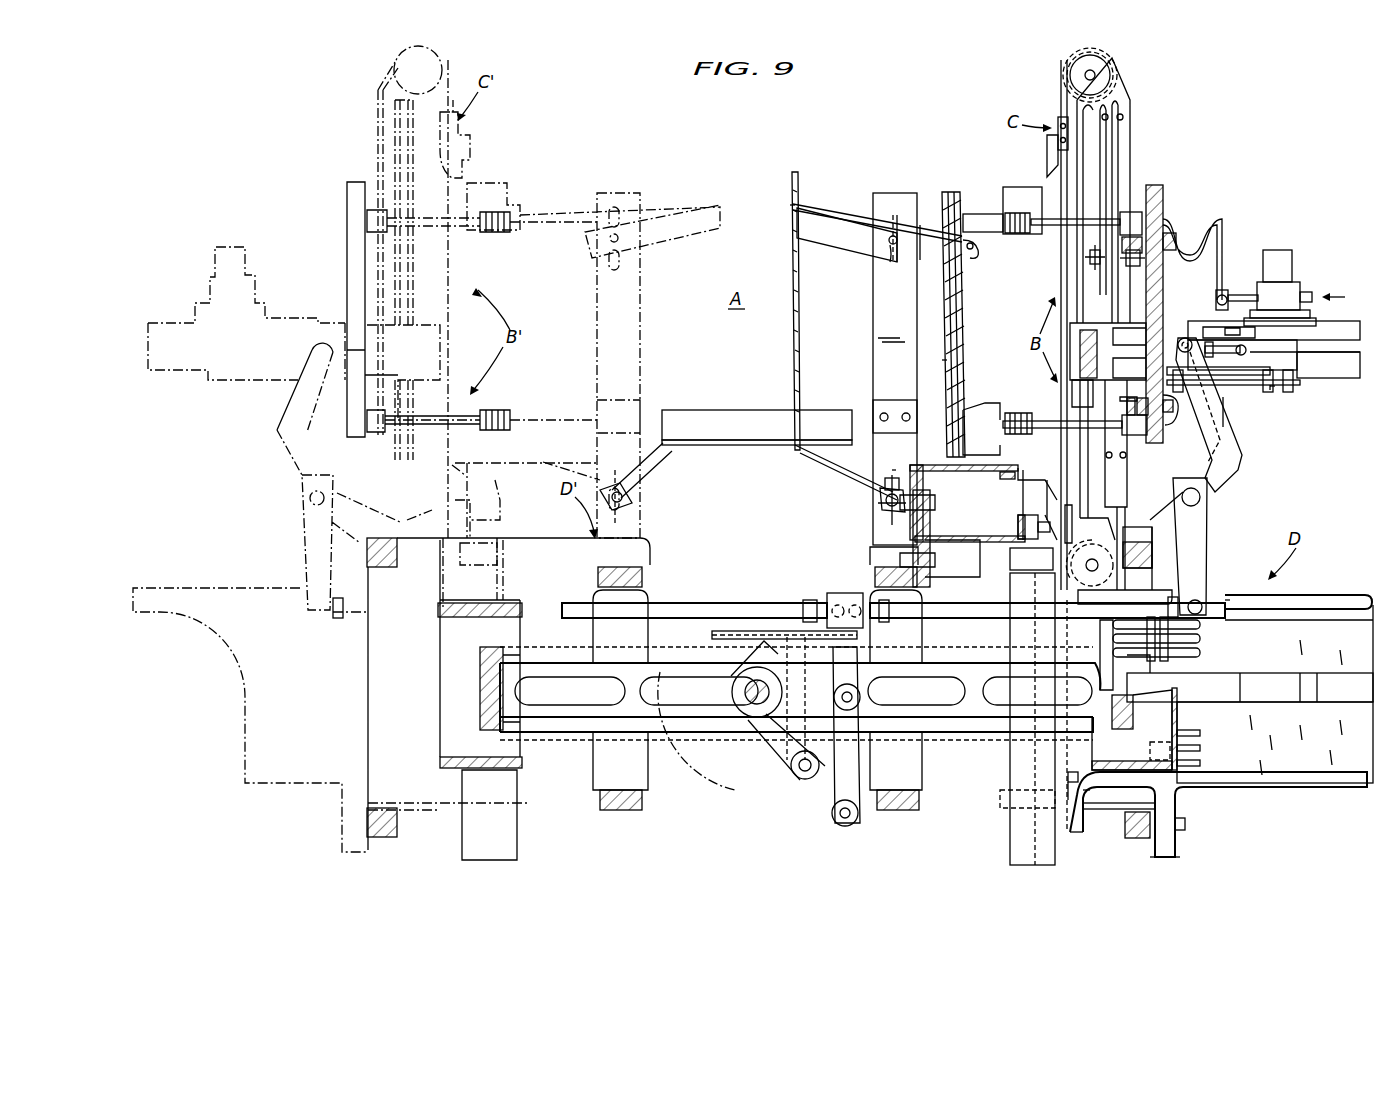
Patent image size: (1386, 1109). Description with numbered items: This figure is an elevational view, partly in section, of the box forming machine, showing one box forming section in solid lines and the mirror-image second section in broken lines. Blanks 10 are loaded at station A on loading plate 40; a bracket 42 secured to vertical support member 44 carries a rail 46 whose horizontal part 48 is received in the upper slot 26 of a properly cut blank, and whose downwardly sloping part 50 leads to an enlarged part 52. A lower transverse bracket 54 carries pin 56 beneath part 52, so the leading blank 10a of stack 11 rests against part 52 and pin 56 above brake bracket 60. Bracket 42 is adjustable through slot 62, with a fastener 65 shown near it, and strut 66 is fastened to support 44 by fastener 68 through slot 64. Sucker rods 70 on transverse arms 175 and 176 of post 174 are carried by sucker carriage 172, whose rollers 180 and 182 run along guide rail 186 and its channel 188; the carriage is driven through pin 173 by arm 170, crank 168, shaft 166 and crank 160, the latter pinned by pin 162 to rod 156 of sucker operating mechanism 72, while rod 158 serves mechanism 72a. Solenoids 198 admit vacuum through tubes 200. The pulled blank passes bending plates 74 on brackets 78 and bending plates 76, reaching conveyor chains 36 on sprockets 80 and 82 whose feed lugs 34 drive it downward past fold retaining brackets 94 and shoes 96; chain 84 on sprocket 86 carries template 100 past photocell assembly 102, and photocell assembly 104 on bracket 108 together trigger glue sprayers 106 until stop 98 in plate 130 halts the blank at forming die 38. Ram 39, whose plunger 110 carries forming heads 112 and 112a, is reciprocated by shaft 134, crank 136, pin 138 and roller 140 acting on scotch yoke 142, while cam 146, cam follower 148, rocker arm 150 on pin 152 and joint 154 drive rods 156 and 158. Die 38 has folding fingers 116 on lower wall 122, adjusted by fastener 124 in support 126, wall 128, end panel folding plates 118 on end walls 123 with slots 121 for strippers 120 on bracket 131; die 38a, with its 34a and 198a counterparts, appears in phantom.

The phantom lever cam 198a is at (235, 252).
The sucker arm operating mechanism 72a is at (278, 314).
The forming die 38a is at (257, 608).
The phantom bracket 34a is at (468, 148).
The sucker rods 70 is at (490, 240).
The supporting post 174 is at (360, 182).
The forming head 112a is at (455, 758).
The double ended plunger or ram 39 is at (978, 640).
The transverse rod 158 is at (755, 590).
The scotch yoke 142 is at (806, 598).
The joint 154 is at (860, 582).
The transverse rod 156 is at (978, 594).
The wall 128 is at (1225, 598).
The pin 162 is at (1202, 612).
The output shaft 134 is at (744, 695).
The crank 136 is at (795, 672).
The pin 138 is at (803, 780).
The roller 140 is at (795, 775).
The cam 146 is at (690, 768).
The cam follower 148 is at (862, 695).
The rocker arm 150 is at (855, 775).
The pin 152 is at (845, 822).
The plunger 110 is at (706, 655).
The blank 10 is at (800, 322).
The loading plate 40 is at (705, 440).
The strut 66 is at (665, 480).
The fastener 68 is at (882, 508).
The slot 64 is at (888, 478).
The vertical support member 44 is at (900, 195).
The lower transverse bracket 54 is at (878, 415).
The bracket 42 is at (835, 220).
The horizontal part 48 is at (830, 195).
The slot 26 is at (792, 205).
The rail 46 is at (870, 215).
The downwardly sloping part 50 is at (918, 232).
The slot 62 is at (888, 238).
The pin 65 is at (892, 250).
The leading blank 10a is at (975, 321).
The stack of blanks 11 is at (944, 363).
The bracket 78 is at (988, 200).
The arcuate bending plate 74 is at (1016, 195).
The enlarged part 52 is at (978, 246).
The transverse arm 175 is at (1135, 212).
The first photocell assembly 102 is at (1088, 258).
The template 100 is at (1120, 295).
The conveyor chains 36 is at (1060, 115).
The third chain 84 is at (1125, 108).
The upper sprocket wheel 80 is at (1088, 56).
The upper sprocket wheel 86 is at (1112, 62).
The feed lug 34 is at (1048, 150).
The tube 200 is at (1222, 238).
The roller 180 is at (1228, 300).
The solenoid 198 is at (1290, 262).
The guide rail 186 is at (1335, 335).
The pin 173 is at (1246, 350).
The sucker carriage 172 is at (1300, 385).
The longitudinal channel 188 is at (1345, 378).
The arm 170 is at (1235, 385).
The roller 182 is at (1278, 384).
The sucker operating mechanism 72 is at (1273, 394).
The crank 168 is at (1235, 455).
The crank 160 is at (1200, 555).
The shaft 166 is at (1200, 500).
The transverse arm 176 is at (1135, 436).
The pin 56 is at (968, 410).
The arcuate bending plate 76 is at (1040, 418).
The lower sprocket wheel 82 is at (1112, 575).
The brake bracket 60 is at (996, 460).
The bracket 108 is at (958, 525).
The fold retaining bracket 94 is at (1024, 490).
The second photocell assembly 104 is at (1018, 526).
The glue sprayer 106 is at (1020, 565).
The fold retaining shoe 96 is at (1010, 752).
The adjustable stop 98 is at (1073, 770).
The end panel folding plate 118 is at (1108, 645).
The strippers 120 is at (1162, 658).
The slot 121 is at (1200, 652).
The vertical bracket 131 is at (1245, 680).
The end wall 123 is at (1372, 605).
The forming die 38 is at (1296, 598).
The forming head 112 is at (1110, 765).
The lower wall 122 is at (1290, 788).
The folding fingers 116 is at (1085, 800).
The plate 130 is at (1095, 808).
The fastener 124 is at (1185, 822).
The support 126 is at (1177, 850).